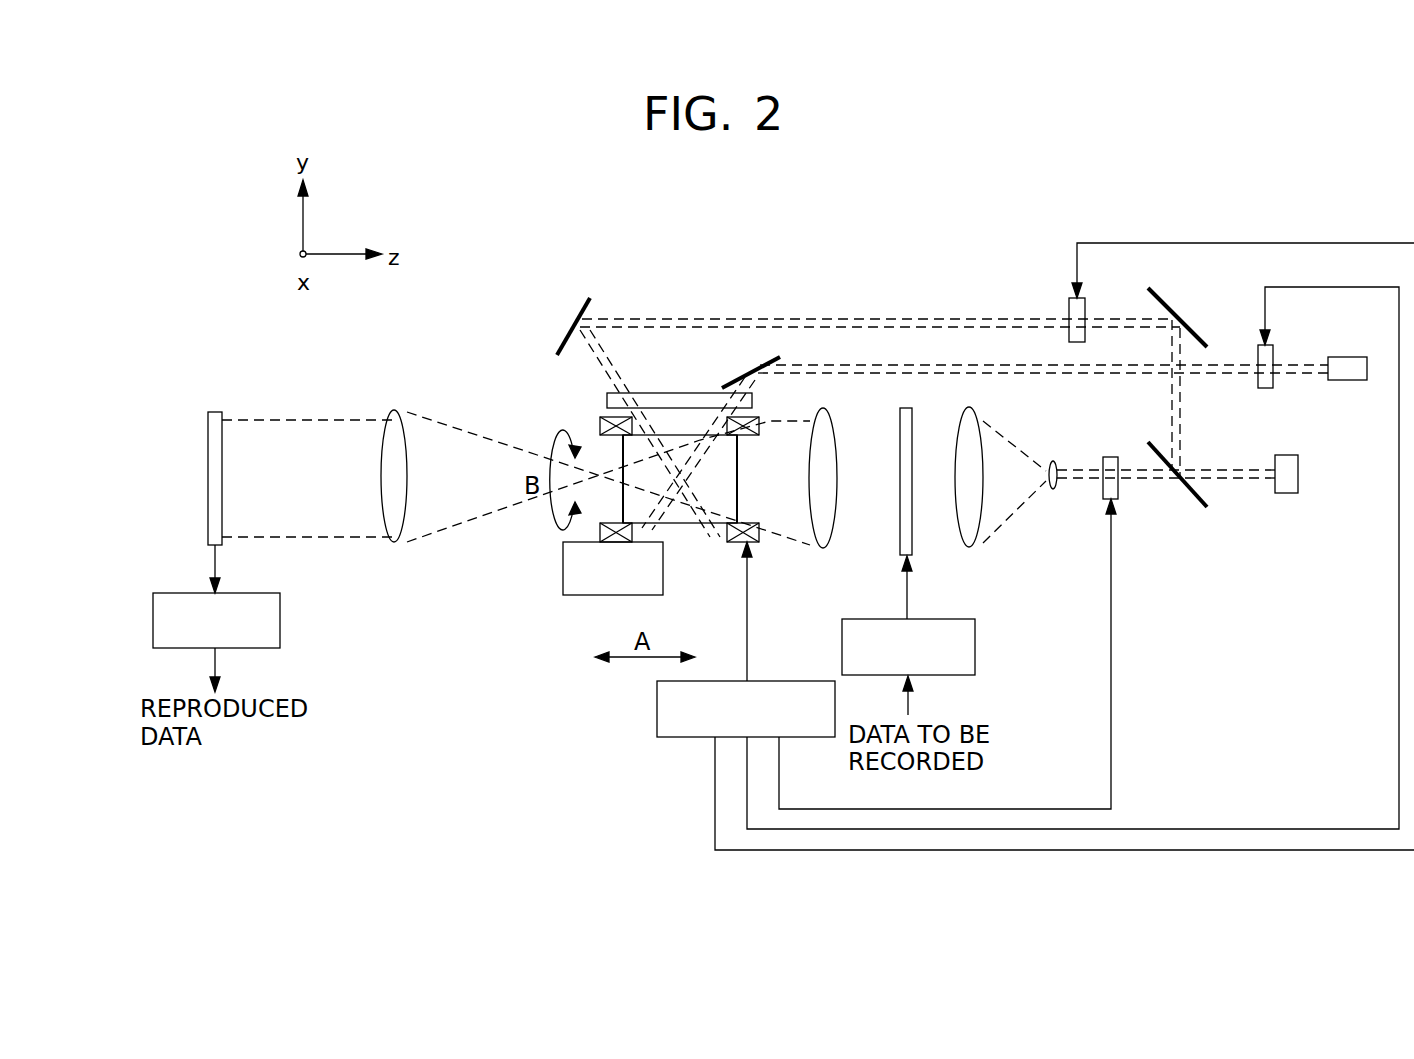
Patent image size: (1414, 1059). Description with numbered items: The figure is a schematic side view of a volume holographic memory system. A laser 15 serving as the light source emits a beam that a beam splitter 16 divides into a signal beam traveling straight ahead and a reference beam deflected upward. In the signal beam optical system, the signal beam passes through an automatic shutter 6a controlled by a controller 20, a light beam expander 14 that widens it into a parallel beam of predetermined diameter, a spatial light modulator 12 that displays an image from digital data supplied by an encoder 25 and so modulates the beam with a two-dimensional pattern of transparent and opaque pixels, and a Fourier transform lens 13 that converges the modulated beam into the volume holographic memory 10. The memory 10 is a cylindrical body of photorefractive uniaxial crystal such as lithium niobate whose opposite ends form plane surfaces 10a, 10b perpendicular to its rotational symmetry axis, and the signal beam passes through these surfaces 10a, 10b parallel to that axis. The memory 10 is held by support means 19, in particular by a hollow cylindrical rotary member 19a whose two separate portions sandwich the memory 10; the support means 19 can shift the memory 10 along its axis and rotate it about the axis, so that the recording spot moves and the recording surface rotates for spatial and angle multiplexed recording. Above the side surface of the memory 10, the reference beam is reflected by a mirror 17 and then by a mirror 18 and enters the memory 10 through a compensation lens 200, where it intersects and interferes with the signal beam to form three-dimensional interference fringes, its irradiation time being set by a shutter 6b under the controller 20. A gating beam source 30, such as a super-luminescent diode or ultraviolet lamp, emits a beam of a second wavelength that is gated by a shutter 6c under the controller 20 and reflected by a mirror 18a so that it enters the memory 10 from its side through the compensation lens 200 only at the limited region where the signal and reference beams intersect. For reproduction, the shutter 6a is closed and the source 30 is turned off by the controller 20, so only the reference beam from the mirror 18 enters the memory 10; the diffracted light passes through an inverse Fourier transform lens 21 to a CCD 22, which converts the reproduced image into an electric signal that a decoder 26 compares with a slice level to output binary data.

The automatic shutter 6a is at (1112, 457).
The shutter 6b is at (1068, 305).
The shutter 6c is at (1262, 389).
The volume holographic memory 10 is at (693, 525).
The end plane surface 10a is at (738, 465).
The end plane surface 10b is at (622, 458).
The spatial light modulator 12 is at (900, 410).
The Fourier transform lens 13 is at (823, 550).
The light beam expander 14 is at (1015, 490).
The laser 15 is at (1288, 494).
The beam splitter 16 is at (1190, 500).
The mirror 17 is at (1155, 290).
The mirror 18 is at (575, 314).
The mirror 18a is at (765, 362).
The support means 19 is at (562, 577).
The hollow cylindrical rotary member 19a is at (752, 543).
The controller 20 is at (672, 738).
The inverse Fourier transform lens 21 is at (398, 410).
The CCD 22 is at (215, 411).
The encoder 25 is at (976, 646).
The decoder 26 is at (281, 622).
The gating beam source 30 is at (1345, 357).
The compensation lens 200 is at (657, 393).